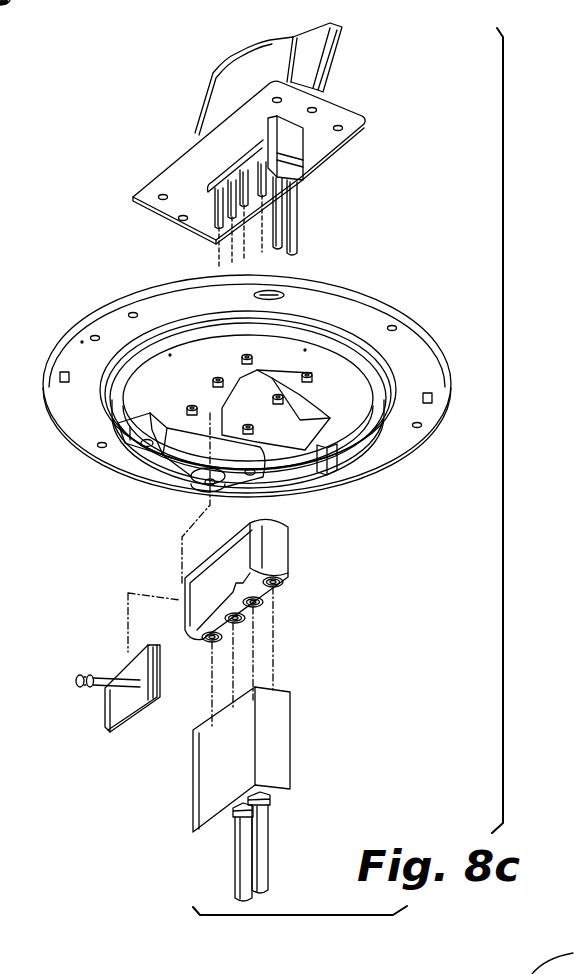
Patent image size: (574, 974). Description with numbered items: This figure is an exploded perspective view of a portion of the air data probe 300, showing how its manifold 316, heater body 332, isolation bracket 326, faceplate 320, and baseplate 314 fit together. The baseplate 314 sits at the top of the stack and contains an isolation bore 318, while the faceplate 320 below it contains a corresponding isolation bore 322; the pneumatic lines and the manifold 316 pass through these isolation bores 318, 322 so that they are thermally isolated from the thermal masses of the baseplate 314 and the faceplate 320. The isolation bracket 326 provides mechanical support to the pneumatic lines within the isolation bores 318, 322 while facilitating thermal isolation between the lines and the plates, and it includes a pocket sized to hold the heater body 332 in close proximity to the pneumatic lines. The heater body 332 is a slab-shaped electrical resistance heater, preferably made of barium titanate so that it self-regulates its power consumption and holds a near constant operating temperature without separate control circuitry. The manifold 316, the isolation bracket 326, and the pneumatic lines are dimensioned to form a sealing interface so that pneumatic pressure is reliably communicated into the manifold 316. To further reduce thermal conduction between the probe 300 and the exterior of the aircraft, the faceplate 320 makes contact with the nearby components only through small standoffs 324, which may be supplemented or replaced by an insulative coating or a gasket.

The probe 300 is at (423, 202).
The baseplate 314 is at (133, 197).
The isolation bore 318 is at (213, 182).
The faceplate 320 is at (85, 326).
The isolation bore 322 is at (195, 428).
The standoffs 324 is at (188, 418).
The isolation bracket 326 is at (289, 548).
The heater body 332 is at (123, 728).
The manifold 316 is at (290, 733).